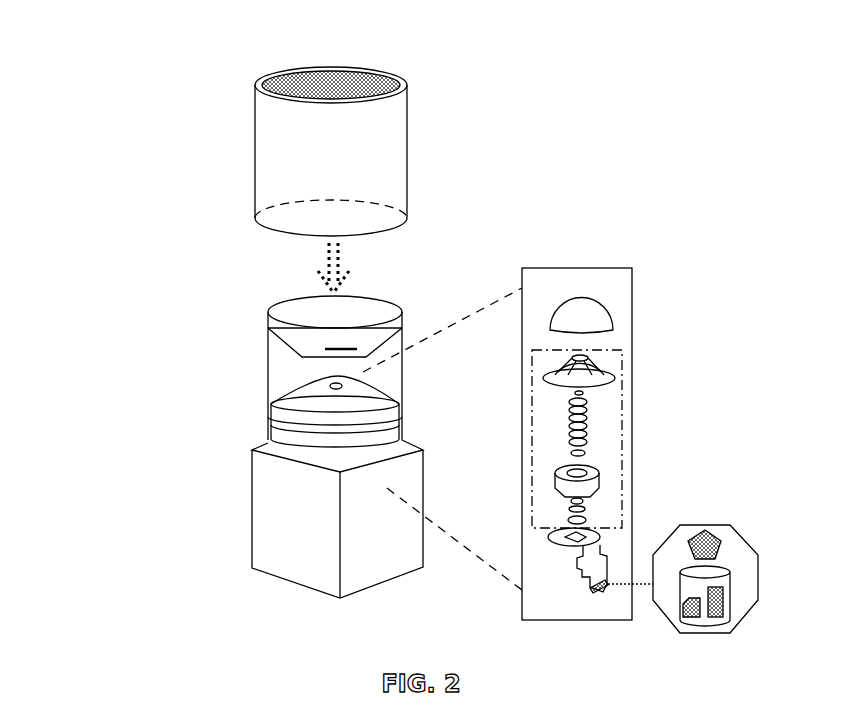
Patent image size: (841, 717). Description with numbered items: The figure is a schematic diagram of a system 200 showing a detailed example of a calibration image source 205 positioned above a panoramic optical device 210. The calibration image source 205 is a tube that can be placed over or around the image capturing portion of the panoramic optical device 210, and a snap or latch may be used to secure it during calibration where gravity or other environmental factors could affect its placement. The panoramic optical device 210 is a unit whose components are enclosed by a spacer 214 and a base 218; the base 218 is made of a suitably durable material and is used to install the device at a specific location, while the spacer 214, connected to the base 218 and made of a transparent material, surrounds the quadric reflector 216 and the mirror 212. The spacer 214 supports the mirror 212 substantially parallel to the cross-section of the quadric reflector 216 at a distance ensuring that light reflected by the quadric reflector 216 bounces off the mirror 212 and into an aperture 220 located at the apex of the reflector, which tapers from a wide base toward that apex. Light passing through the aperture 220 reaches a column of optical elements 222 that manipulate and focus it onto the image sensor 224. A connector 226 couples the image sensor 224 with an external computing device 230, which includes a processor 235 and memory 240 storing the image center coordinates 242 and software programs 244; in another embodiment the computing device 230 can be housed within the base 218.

The system 200 is at (100, 19).
The calibration image source 205 is at (336, 167).
The panoramic optical device 210 is at (165, 598).
The mirror 212 is at (335, 350).
The spacer 214 is at (273, 404).
The quadric reflector 216 is at (378, 397).
The base 218 is at (337, 519).
The aperture 220 is at (583, 298).
The optical elements 222 is at (625, 373).
The image sensor 224 is at (548, 538).
The connector 226 is at (597, 590).
The computing device 230 is at (728, 578).
The processor 235 is at (716, 549).
The memory 240 is at (706, 574).
The image center coordinates 242 is at (690, 604).
The software programs 244 is at (717, 608).